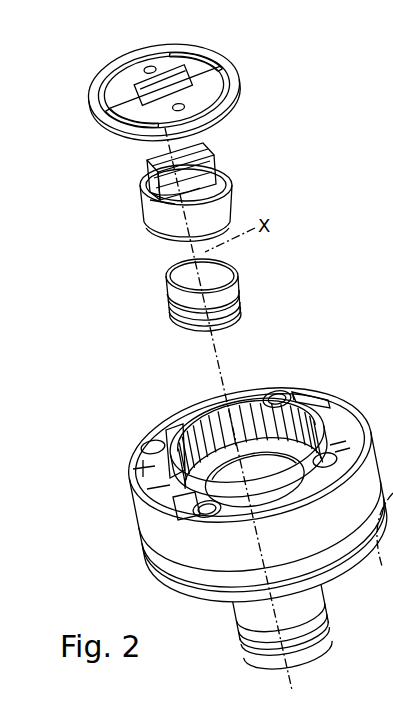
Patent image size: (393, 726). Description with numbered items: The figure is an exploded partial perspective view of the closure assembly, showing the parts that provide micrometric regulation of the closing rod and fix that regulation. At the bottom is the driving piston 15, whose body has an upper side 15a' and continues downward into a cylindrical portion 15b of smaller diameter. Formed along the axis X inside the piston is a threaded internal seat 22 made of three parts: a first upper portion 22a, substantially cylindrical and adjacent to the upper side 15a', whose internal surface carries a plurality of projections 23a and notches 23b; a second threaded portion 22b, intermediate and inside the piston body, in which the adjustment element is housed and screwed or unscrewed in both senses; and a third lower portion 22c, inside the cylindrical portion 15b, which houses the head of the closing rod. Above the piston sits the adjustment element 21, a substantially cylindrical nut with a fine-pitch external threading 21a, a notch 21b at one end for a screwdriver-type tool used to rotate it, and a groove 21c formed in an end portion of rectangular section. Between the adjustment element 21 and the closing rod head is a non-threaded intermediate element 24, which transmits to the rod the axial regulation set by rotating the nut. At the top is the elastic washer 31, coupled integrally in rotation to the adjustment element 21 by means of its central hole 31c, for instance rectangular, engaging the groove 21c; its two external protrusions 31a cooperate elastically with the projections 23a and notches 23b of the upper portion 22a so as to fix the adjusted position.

The driving piston 15 is at (224, 483).
The upper side of the body of the driving piston 15a' is at (270, 444).
The cylindrical portion of the driving piston 15b is at (300, 605).
The adjustment element 21 is at (195, 192).
The threading 21a is at (222, 200).
The notch 21b is at (150, 174).
The groove 21c is at (158, 204).
The internal seat 22 is at (269, 398).
The first upper portion 22a is at (163, 443).
The second threaded portion 22b is at (285, 462).
The third lower portion 22c is at (312, 678).
The projections 23a is at (224, 410).
The notches 23b is at (272, 410).
The intermediate element 24 is at (242, 280).
The elastic washer 31 is at (166, 79).
The protrusions 31a is at (235, 72).
The central hole 31c is at (172, 68).